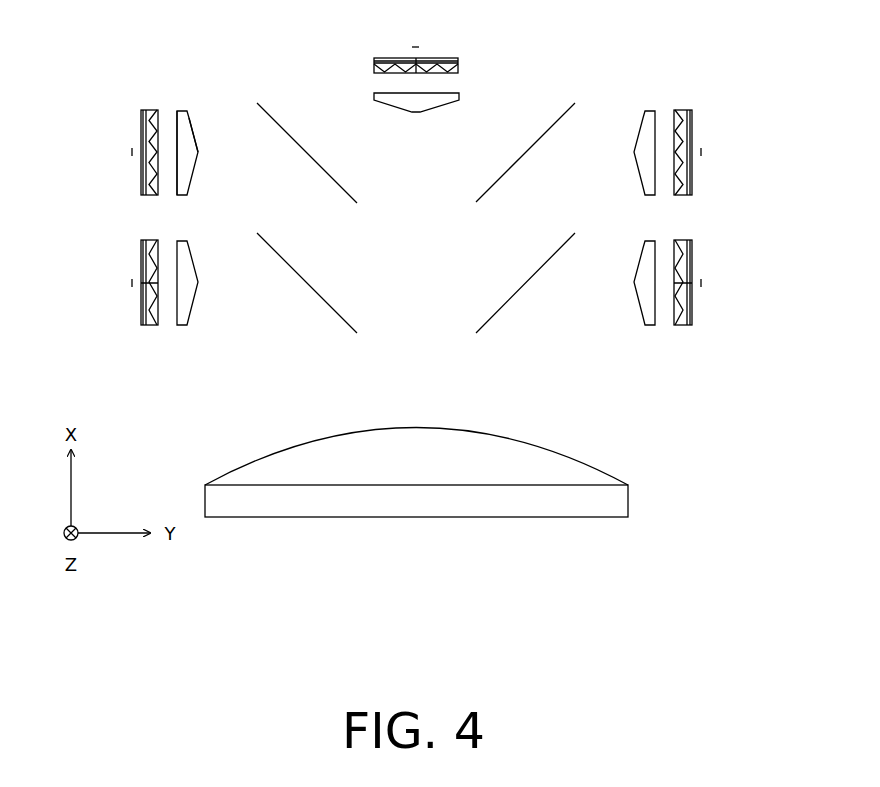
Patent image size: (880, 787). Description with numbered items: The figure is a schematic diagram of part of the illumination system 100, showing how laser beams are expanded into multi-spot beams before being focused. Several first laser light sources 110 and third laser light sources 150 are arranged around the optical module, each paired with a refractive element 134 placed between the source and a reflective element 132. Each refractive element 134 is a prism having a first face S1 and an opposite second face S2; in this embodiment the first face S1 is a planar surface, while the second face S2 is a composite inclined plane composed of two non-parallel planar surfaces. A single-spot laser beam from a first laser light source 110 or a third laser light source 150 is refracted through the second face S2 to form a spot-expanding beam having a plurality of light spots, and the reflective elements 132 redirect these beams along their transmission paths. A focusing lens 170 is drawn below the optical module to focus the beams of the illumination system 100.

The illumination system 100 is at (745, 575).
The first laser light source 110 is at (142, 258).
The reflective element 132 is at (329, 306).
The refractive element 134 is at (192, 190).
The third laser light source 150 is at (141, 175).
The focusing lens 170 is at (628, 499).
The first face S1 is at (176, 118).
The second face S2 is at (194, 126).